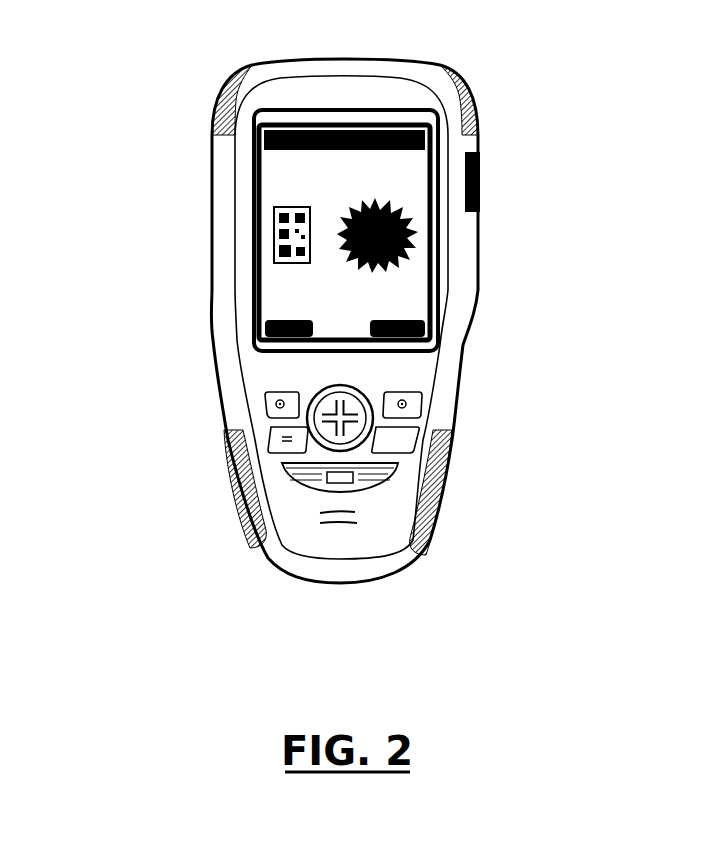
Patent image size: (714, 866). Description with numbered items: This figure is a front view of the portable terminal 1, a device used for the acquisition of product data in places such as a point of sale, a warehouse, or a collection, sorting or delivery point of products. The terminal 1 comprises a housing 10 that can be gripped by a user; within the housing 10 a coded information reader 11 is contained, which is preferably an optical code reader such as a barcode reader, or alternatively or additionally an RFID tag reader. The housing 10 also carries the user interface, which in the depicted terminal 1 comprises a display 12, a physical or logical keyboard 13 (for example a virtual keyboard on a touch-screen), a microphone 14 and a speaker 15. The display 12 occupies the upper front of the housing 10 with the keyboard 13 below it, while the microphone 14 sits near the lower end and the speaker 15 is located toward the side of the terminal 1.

The portable terminal 1 is at (207, 166).
The housing 10 is at (219, 229).
The coded information reader 11 is at (462, 80).
The display 12 is at (413, 256).
The keyboard 13 is at (300, 422).
The microphone 14 is at (343, 526).
The speaker 15 is at (480, 183).